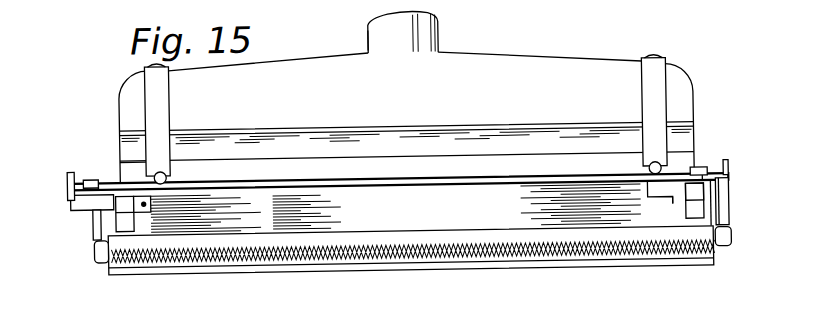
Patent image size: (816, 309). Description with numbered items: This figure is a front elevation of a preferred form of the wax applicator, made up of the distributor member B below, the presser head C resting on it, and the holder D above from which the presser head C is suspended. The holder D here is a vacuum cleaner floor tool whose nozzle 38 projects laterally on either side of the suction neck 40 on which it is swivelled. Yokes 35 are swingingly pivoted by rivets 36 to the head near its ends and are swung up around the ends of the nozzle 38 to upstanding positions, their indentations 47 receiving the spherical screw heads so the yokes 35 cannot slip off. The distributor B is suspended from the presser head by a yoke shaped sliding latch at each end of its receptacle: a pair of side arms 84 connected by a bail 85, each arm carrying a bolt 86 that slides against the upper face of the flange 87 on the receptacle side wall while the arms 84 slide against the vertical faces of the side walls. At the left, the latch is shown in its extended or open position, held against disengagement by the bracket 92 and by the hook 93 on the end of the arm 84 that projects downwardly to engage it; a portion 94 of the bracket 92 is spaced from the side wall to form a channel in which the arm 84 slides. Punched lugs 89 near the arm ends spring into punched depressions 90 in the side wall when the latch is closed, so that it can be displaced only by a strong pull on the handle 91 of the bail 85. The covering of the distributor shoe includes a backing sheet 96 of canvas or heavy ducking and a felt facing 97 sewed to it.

The yoke 35 is at (643, 108).
The rivet 36 is at (645, 170).
The nozzle 38 is at (406, 116).
The suction neck 40 is at (440, 32).
The indentation 47 is at (651, 59).
The side arm 84 is at (719, 193).
The bail 85 is at (730, 182).
The bolt 86 is at (700, 172).
The flange 87 is at (541, 182).
The punched lug 89 is at (656, 202).
The punched depression 90 is at (183, 207).
The handle 91 is at (728, 170).
The bracket 92 is at (701, 218).
The hook 93 is at (672, 208).
The bracket portion 94 is at (697, 202).
The backing sheet 96 is at (474, 242).
The felt facing 97 is at (355, 262).
The distributor member B is at (430, 207).
The presser head C is at (407, 168).
The holder D is at (370, 36).